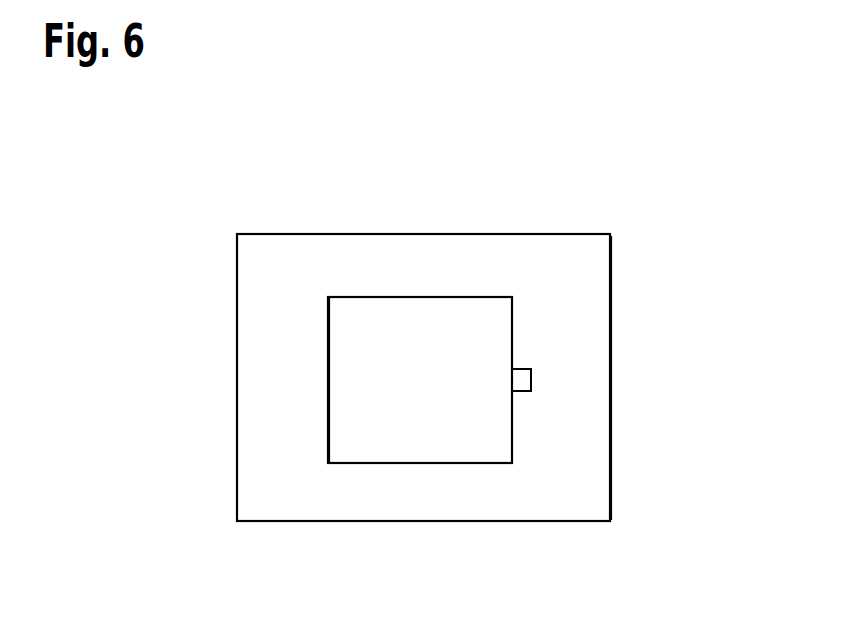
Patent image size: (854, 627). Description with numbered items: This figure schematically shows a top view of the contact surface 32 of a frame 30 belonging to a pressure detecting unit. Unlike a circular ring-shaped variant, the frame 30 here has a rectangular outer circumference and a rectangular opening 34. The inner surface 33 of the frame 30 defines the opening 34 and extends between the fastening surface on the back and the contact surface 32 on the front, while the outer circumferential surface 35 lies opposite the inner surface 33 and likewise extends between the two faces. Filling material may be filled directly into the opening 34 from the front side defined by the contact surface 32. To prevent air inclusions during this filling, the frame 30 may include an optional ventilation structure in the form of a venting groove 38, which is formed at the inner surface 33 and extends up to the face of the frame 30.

The frame 30 is at (611, 309).
The contact surface 32 is at (562, 453).
The inner surface 33 is at (329, 387).
The opening 34 is at (381, 288).
The outer circumferential surface 35 is at (611, 400).
The venting groove 38 is at (520, 369).